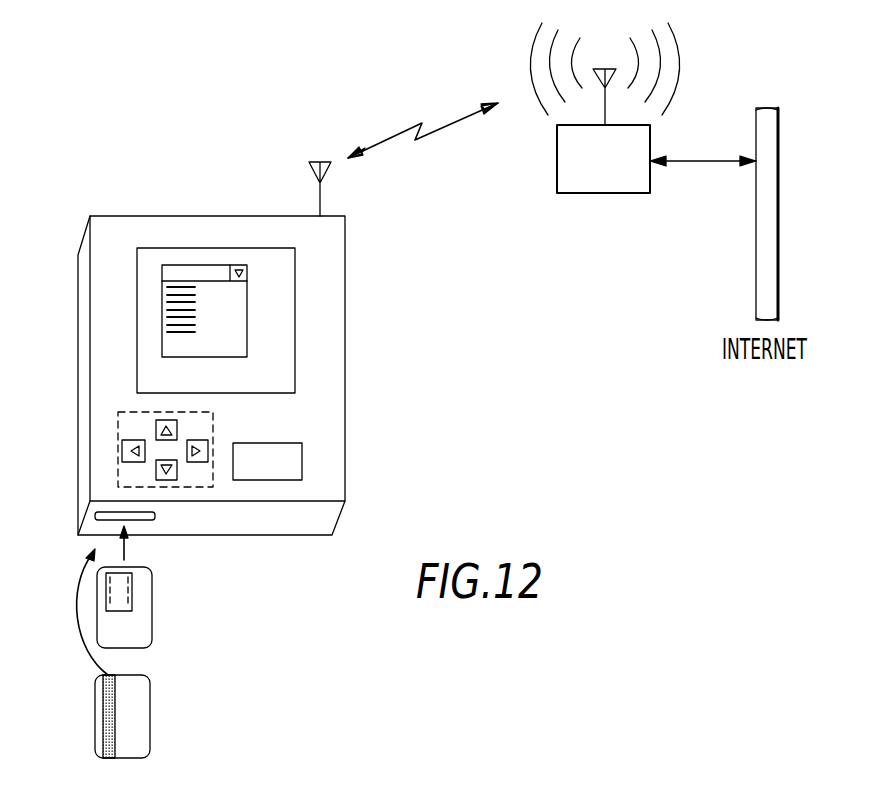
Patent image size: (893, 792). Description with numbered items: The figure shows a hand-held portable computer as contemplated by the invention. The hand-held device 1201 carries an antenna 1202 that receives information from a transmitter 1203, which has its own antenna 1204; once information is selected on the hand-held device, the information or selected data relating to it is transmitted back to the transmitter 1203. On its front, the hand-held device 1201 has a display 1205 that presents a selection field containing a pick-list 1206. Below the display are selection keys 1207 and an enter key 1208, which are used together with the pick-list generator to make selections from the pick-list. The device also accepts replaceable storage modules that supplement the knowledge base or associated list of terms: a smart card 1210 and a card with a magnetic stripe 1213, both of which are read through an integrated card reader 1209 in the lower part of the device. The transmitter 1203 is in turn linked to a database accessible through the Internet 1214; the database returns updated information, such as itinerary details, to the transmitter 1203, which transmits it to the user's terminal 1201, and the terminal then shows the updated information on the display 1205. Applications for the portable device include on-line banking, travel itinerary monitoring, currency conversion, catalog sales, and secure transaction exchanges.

The hand-held device 1201 is at (345, 293).
The antenna 1202 is at (320, 193).
The transmitter 1203 is at (571, 193).
The antenna 1204 is at (605, 112).
The display 1205 is at (295, 347).
The pick-list 1206 is at (176, 265).
The selection keys 1207 is at (118, 412).
The enter key 1208 is at (302, 458).
The integrated card reader 1209 is at (155, 516).
The smart card 1210 is at (152, 603).
The card with a magnetic stripe 1213 is at (150, 702).
The Internet 1214 is at (778, 247).